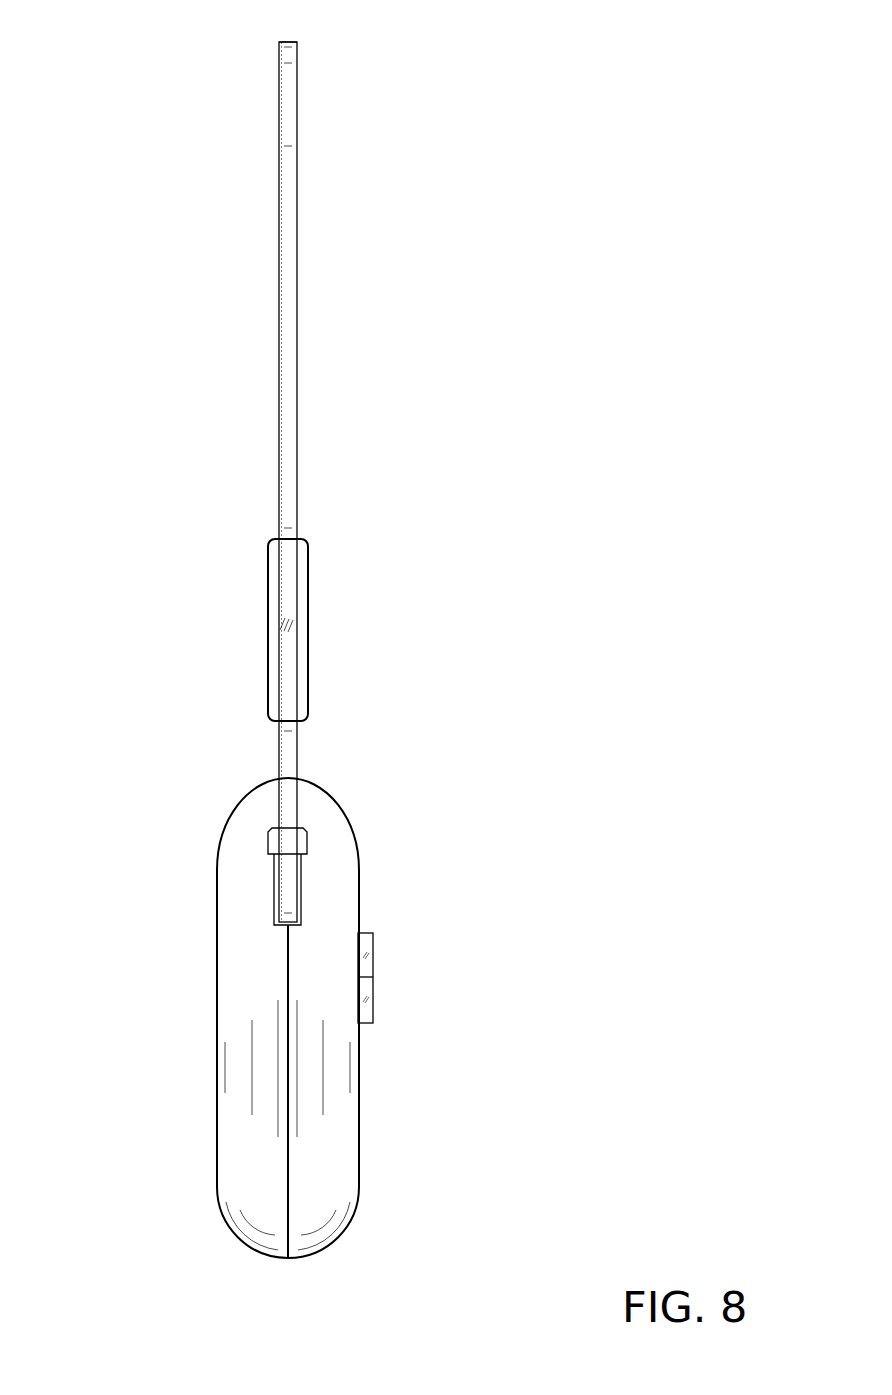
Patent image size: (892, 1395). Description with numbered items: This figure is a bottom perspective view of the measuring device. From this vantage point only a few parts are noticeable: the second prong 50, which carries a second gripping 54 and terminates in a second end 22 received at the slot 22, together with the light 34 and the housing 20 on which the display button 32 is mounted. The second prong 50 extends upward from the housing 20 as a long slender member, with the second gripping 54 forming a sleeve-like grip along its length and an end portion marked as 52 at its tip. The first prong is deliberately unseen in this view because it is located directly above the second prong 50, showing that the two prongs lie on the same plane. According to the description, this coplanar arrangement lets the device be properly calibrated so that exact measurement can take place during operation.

The housing 20 is at (217, 1073).
The second end 22 is at (301, 887).
The display button 32 is at (373, 962).
The light 34 is at (307, 843).
The second prong 50 is at (297, 422).
The rod tip 52 is at (285, 42).
The second gripping 54 is at (285, 589).